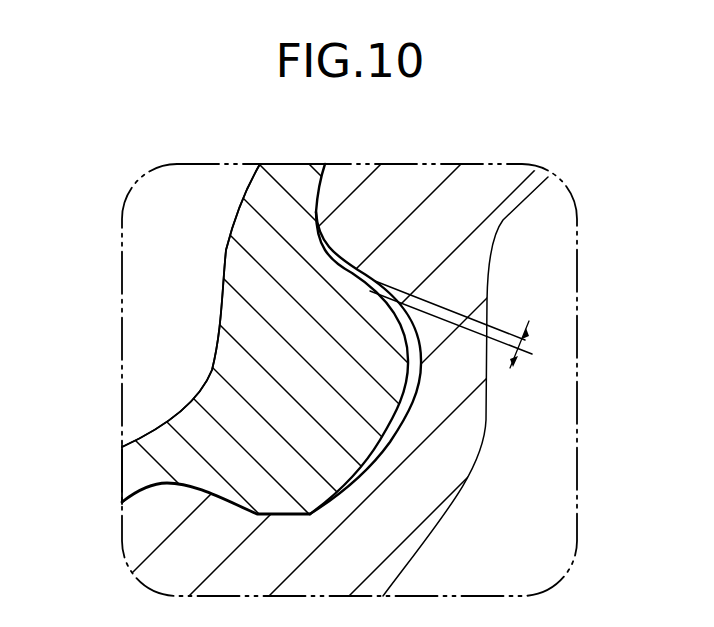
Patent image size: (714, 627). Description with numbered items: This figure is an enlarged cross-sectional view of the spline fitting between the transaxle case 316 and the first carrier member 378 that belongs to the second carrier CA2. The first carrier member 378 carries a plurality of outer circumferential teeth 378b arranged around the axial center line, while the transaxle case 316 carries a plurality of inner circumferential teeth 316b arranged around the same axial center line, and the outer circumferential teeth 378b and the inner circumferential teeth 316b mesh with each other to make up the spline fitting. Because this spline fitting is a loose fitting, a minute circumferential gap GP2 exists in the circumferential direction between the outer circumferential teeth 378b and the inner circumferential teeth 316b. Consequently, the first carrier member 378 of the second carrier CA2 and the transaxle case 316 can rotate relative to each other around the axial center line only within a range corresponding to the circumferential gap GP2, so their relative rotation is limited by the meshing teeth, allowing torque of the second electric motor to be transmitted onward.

The inner circumferential teeth 316b is at (345, 172).
The first carrier member 378 is at (220, 313).
The second carrier CA2 is at (191, 305).
The outer circumferential teeth 378b is at (337, 472).
The transaxle case 316 is at (490, 456).
The circumferential gap GP2 is at (528, 348).